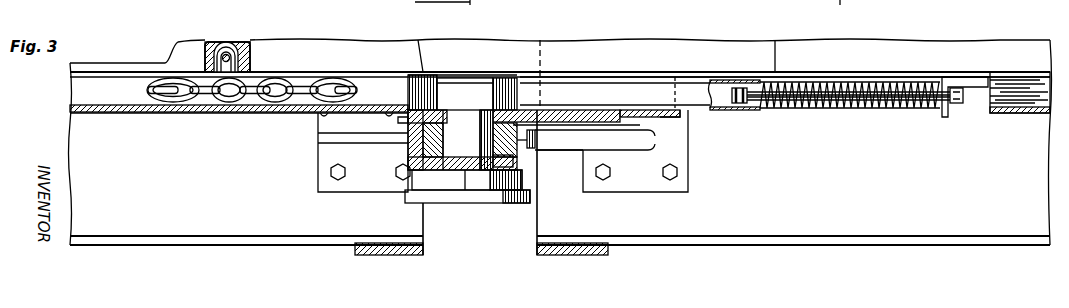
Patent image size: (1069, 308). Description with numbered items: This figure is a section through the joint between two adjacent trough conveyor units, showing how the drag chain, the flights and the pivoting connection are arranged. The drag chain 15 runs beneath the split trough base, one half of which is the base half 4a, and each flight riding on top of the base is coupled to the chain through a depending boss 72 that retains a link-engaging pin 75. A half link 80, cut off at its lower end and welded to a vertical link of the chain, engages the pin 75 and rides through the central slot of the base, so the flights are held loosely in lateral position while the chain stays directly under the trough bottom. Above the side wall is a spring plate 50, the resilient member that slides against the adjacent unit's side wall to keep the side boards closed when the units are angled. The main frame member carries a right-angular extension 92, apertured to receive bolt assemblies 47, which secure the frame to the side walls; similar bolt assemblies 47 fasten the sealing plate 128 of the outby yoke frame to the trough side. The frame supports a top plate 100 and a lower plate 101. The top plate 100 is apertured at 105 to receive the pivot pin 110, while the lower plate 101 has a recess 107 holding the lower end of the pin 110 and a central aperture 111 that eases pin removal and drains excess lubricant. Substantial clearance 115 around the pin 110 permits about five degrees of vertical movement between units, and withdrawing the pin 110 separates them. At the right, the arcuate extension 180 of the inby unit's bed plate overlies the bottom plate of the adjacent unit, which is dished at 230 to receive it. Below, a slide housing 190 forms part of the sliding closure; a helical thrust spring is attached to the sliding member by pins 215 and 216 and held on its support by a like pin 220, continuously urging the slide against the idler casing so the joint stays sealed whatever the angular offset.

The base half 4a is at (875, 78).
The drag chain 15 is at (212, 109).
The bolt assemblies 47 is at (340, 170).
The spring plate 50 is at (510, 0).
The depending boss 72 is at (251, 57).
The link-engaging pin 75 is at (222, 50).
The half link 80 is at (241, 45).
The right-angular extension 92 is at (320, 152).
The top plate 100 is at (587, 114).
The lower plate 101 is at (514, 162).
The aperture 105 is at (447, 122).
The recess 107 is at (445, 163).
The pivot pin 110 is at (479, 136).
The central aperture 111 is at (467, 163).
The clearance 115 is at (530, 108).
The sealing plate 128 is at (689, 164).
The arcuate extension 180 is at (631, 73).
The slide housing 190 is at (674, 114).
The pin 215 is at (740, 105).
The pin 216 is at (766, 106).
The pin 220 is at (954, 104).
The dished portion 230 is at (690, 78).